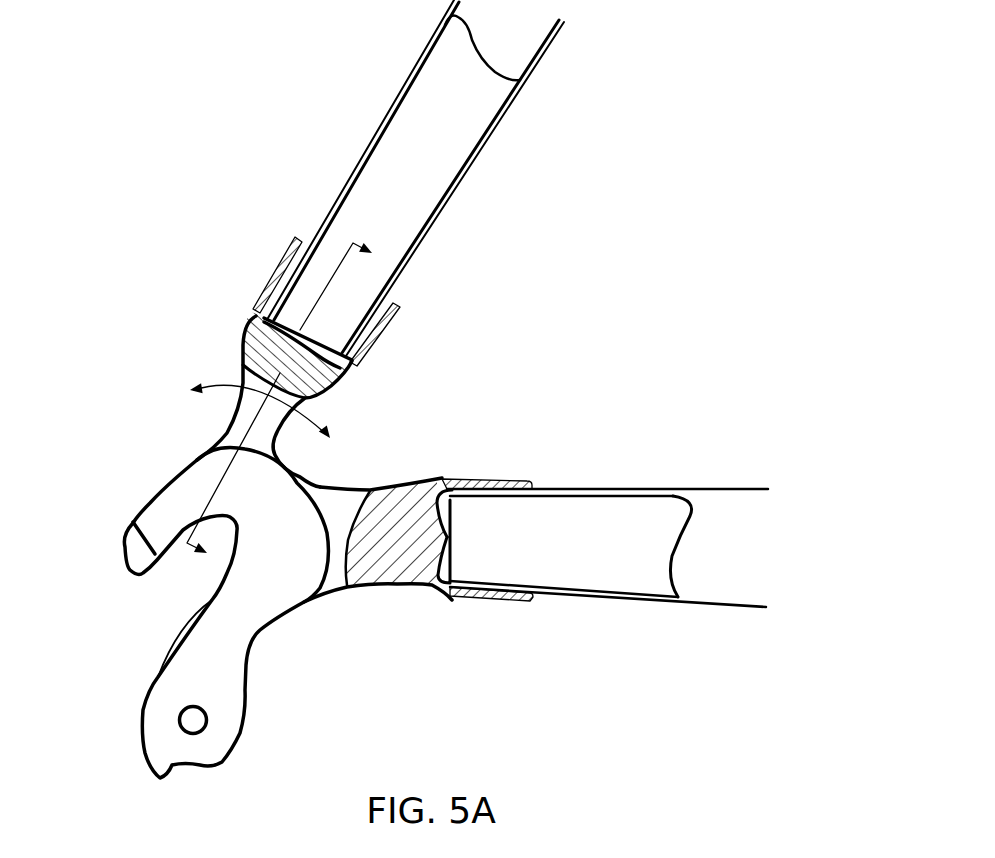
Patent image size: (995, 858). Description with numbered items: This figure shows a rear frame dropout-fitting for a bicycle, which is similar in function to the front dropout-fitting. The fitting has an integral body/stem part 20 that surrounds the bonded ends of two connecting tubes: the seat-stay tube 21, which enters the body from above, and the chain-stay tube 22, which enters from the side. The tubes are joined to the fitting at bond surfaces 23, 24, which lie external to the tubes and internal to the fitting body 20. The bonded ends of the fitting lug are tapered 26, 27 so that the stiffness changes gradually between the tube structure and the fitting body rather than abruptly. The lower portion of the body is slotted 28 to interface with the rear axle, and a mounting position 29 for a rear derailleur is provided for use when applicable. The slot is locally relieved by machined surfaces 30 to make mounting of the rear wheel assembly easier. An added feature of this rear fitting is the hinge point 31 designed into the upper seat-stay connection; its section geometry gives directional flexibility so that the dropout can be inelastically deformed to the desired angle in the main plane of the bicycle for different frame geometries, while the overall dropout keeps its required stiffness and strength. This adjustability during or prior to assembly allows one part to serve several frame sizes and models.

The integral body/stem part 20 is at (288, 591).
The seat-stay tube 21 is at (414, 184).
The chain-stay tube 22 is at (602, 521).
The bond surface 23 is at (277, 235).
The bond surface 24 is at (487, 461).
The tapered bonded end 26 is at (396, 334).
The tapered bonded end 27 is at (491, 626).
The slot 28 is at (201, 429).
The mounting position 29 is at (233, 756).
The machined surfaces 30 is at (128, 601).
The hinge point 31 is at (274, 372).